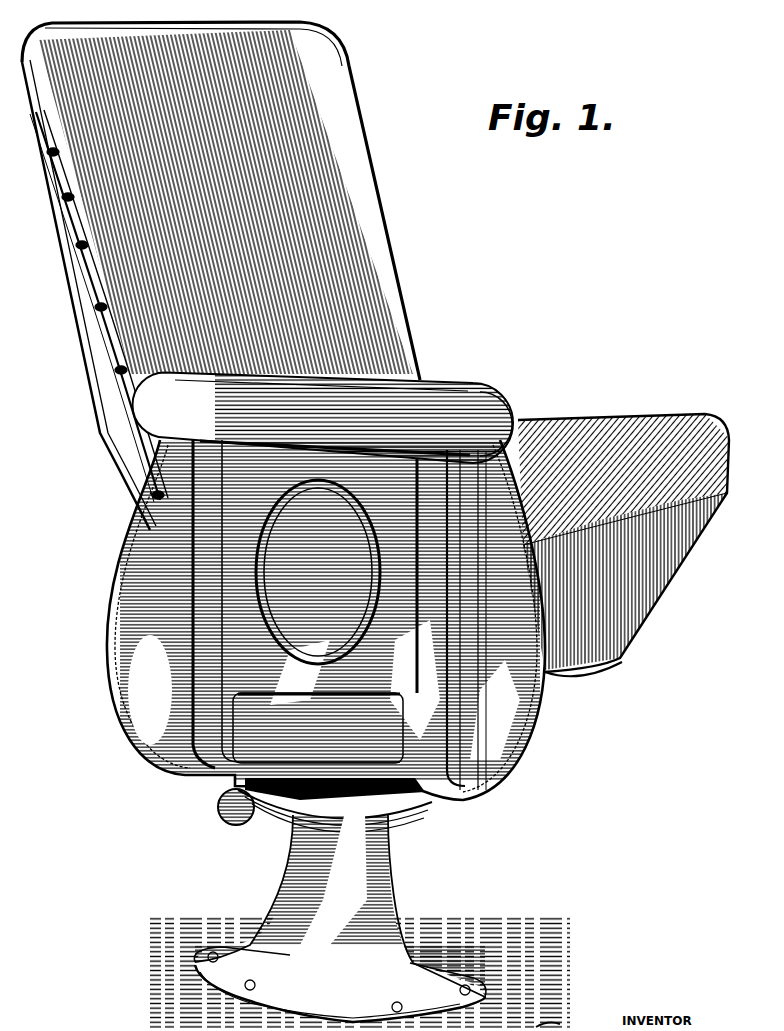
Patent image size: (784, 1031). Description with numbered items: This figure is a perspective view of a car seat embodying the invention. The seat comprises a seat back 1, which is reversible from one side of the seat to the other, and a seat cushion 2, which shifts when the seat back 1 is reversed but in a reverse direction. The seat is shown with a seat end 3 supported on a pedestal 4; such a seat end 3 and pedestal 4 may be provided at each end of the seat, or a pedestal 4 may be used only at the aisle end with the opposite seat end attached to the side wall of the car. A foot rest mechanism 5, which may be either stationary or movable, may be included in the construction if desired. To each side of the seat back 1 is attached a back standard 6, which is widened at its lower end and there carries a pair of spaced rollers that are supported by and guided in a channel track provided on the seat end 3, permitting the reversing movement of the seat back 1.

The seat back 1 is at (328, 82).
The seat cushion 2 is at (628, 414).
The seat end 3 is at (130, 637).
The pedestal 4 is at (292, 876).
The foot rest mechanism 5 is at (222, 806).
The back standard 6 is at (122, 472).